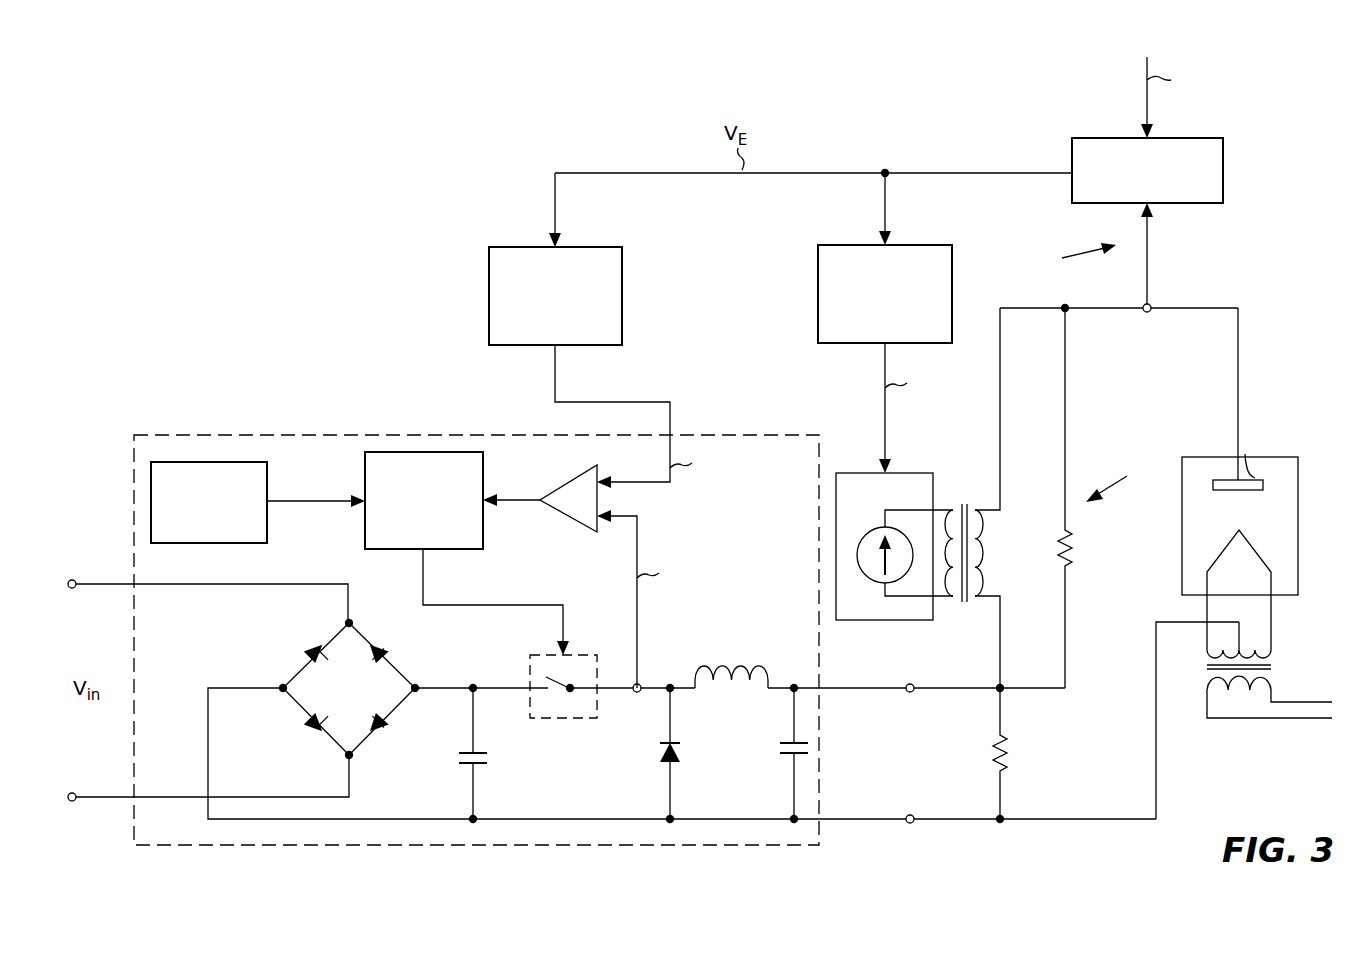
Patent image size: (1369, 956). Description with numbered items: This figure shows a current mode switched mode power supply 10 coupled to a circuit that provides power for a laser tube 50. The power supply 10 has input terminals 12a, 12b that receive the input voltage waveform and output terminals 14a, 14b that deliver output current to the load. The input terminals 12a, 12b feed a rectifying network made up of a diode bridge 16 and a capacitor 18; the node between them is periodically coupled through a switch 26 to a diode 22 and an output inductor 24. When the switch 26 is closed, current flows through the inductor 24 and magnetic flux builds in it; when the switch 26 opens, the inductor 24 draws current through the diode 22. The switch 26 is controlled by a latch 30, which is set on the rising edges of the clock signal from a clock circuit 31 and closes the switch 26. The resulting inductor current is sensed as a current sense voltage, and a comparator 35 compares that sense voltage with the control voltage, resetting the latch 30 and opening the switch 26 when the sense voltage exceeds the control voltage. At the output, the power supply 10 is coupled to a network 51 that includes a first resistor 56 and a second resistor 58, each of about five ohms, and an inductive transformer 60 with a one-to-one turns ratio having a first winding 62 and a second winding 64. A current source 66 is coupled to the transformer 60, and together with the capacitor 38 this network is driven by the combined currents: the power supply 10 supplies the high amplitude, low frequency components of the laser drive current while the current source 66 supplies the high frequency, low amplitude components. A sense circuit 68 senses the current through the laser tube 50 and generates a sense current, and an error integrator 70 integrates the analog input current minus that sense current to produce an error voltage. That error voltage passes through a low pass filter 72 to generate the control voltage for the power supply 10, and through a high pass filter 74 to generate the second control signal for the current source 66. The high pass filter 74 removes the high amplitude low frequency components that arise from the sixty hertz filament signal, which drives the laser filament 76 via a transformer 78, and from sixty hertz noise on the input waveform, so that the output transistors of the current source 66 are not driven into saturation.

The current mode switched mode power supply 10 is at (476, 640).
The input terminal 12a is at (96, 590).
The input terminal 12b is at (96, 790).
The output terminal 14a is at (910, 694).
The output terminal 14b is at (910, 813).
The diode bridge 16 is at (349, 689).
The capacitor 18 is at (457, 757).
The diode 22 is at (658, 752).
The output inductor 24 is at (739, 660).
The switch 26 is at (573, 718).
The latch 30 is at (445, 549).
The clock circuit 31 is at (228, 543).
The comparator 35 is at (560, 515).
The capacitor 38 is at (777, 748).
The laser tube 50 is at (1264, 483).
The network 51 is at (1124, 476).
The first resistor 56 is at (1072, 552).
The second resistor 58 is at (1010, 757).
The inductive transformer 60 is at (996, 498).
The first winding 62 is at (950, 600).
The second winding 64 is at (990, 552).
The current source 66 is at (870, 528).
The sense circuit 68 is at (1147, 312).
The error integrator 70 is at (1187, 203).
The low pass filter 72 is at (594, 345).
The high pass filter 74 is at (842, 343).
The laser filament 76 is at (1258, 556).
The transformer 78 is at (1273, 667).